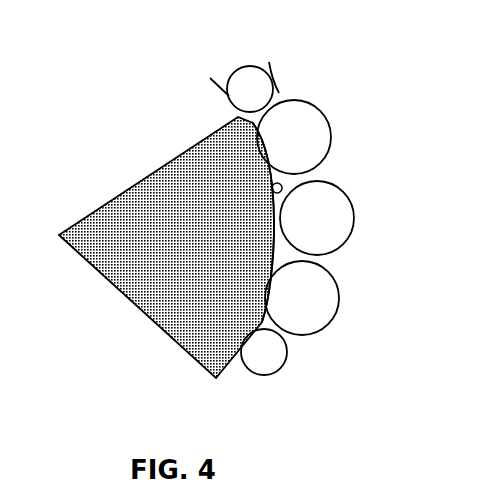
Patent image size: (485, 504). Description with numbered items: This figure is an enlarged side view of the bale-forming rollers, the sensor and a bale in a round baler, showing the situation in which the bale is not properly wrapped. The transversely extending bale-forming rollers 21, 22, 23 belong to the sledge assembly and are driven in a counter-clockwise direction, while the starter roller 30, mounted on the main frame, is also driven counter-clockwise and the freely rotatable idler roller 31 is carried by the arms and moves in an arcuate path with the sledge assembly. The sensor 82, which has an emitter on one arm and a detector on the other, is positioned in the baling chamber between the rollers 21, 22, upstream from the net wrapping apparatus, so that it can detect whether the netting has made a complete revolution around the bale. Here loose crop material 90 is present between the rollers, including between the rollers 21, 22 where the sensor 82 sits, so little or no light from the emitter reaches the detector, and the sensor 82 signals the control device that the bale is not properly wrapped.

The bale-forming roller 21 is at (316, 118).
The bale-forming roller 22 is at (345, 221).
The bale-forming roller 23 is at (333, 302).
The starter roller 30 is at (262, 363).
The idler roller 31 is at (272, 88).
The sensor 82 is at (283, 185).
The loose crop material 90 is at (300, 179).